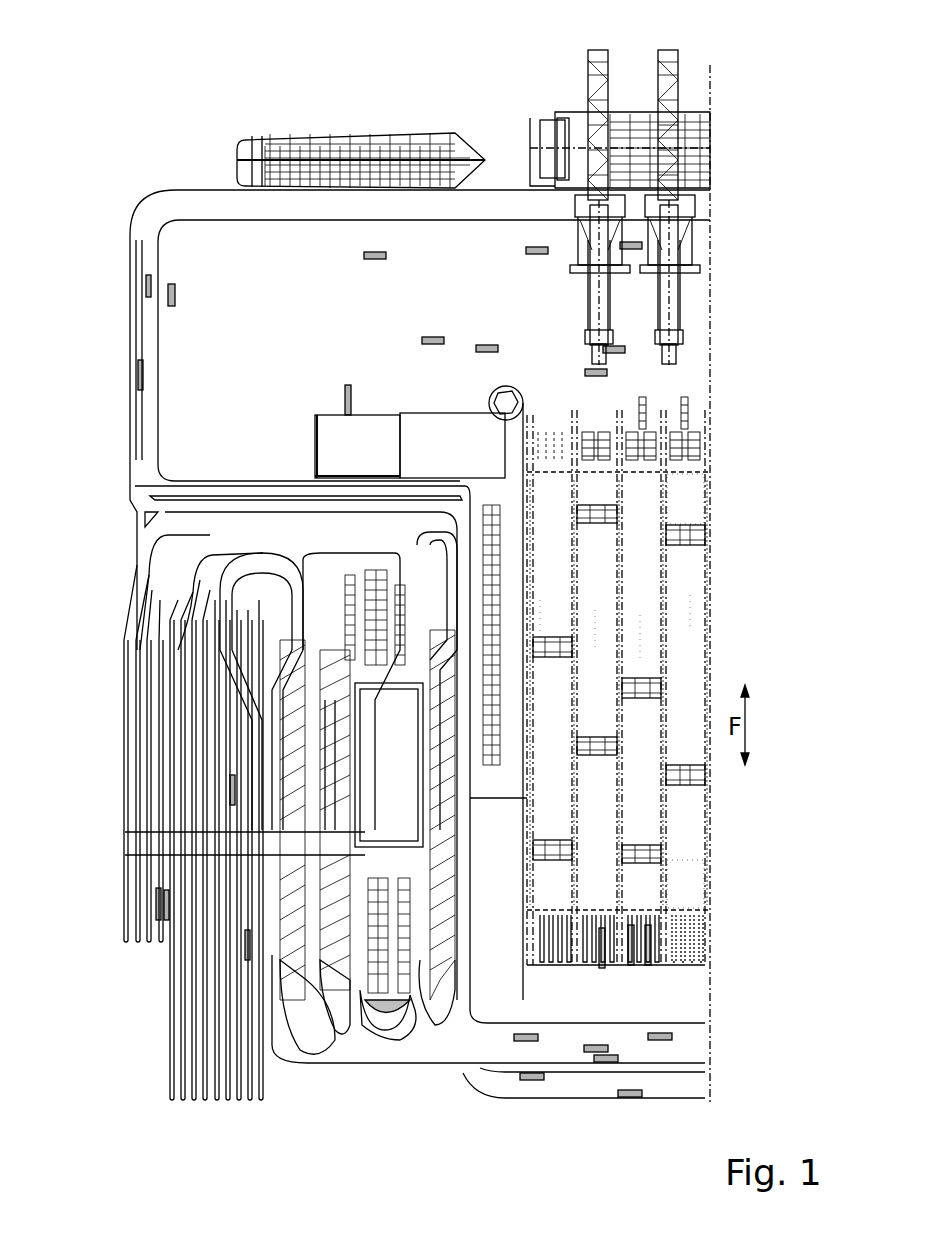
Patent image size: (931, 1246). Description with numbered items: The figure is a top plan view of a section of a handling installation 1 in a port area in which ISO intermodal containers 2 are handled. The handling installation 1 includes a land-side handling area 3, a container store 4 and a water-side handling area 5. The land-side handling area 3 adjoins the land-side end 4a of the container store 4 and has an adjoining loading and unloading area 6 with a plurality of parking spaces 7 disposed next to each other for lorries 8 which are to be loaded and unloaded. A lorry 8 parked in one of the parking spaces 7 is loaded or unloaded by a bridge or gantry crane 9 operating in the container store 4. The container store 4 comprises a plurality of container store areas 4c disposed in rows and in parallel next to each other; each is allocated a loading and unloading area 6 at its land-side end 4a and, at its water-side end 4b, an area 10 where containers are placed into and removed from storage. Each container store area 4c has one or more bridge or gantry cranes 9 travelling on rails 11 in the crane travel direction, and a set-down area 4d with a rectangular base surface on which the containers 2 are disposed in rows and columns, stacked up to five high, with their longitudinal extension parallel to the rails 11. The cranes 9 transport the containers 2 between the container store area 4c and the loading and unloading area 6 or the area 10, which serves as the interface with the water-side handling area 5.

The handling installation 1 is at (72, 683).
The containers 2 is at (548, 678).
The land-side handling area 3 is at (156, 971).
The container store 4 is at (710, 828).
The land-side end 4a is at (683, 885).
The water-side end 4b is at (690, 483).
The container store areas 4c is at (680, 600).
The set-down area 4d is at (683, 552).
The water-side handling area 5 is at (240, 328).
The loading and unloading area 6 is at (546, 951).
The parking spaces 7 is at (555, 968).
The lorries 8 is at (645, 968).
The bridge or gantry crane 9 is at (690, 772).
The area where containers are placed into and removed from storage 10 is at (696, 418).
The rails 11 is at (667, 582).